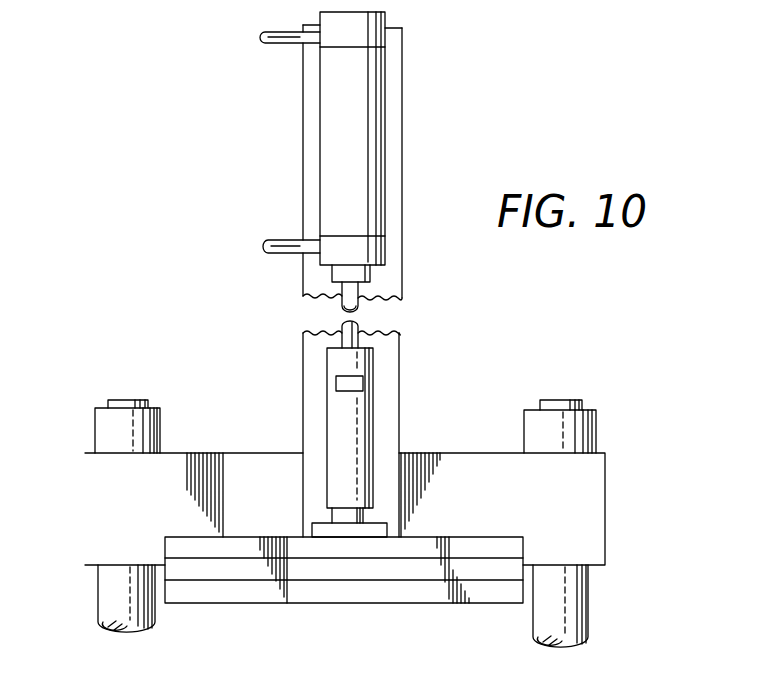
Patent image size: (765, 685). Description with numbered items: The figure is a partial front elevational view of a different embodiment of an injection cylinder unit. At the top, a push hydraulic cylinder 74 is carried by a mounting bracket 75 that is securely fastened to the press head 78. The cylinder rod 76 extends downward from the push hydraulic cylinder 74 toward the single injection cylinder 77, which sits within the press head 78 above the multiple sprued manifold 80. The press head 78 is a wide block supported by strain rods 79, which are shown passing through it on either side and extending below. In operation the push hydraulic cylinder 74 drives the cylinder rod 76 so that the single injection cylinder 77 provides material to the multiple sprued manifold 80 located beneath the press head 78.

The push hydraulic cylinder 74 is at (370, 143).
The mounting bracket 75 is at (395, 97).
The cylinder rod 76 is at (358, 307).
The single injection cylinder 77 is at (365, 413).
The press head 78 is at (593, 494).
The strain rods 79 is at (100, 605).
The multiple sprued manifold 80 is at (370, 595).